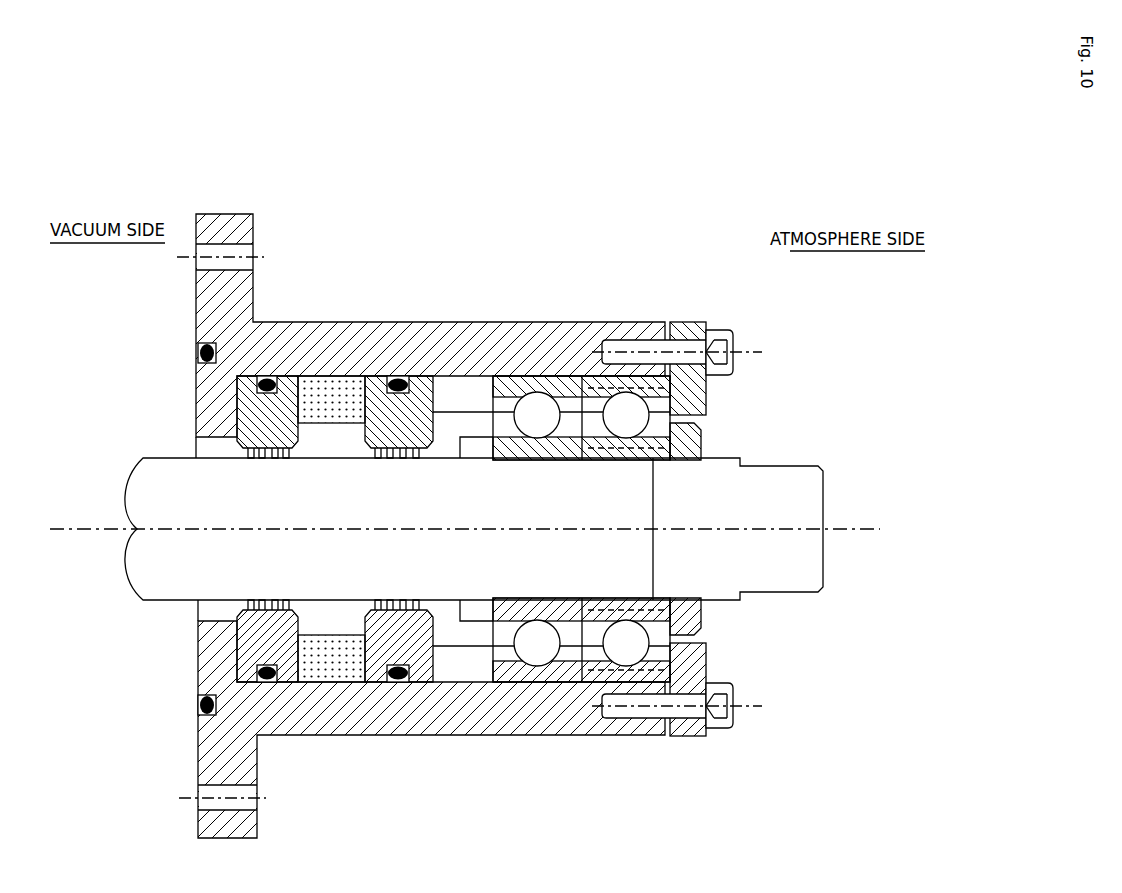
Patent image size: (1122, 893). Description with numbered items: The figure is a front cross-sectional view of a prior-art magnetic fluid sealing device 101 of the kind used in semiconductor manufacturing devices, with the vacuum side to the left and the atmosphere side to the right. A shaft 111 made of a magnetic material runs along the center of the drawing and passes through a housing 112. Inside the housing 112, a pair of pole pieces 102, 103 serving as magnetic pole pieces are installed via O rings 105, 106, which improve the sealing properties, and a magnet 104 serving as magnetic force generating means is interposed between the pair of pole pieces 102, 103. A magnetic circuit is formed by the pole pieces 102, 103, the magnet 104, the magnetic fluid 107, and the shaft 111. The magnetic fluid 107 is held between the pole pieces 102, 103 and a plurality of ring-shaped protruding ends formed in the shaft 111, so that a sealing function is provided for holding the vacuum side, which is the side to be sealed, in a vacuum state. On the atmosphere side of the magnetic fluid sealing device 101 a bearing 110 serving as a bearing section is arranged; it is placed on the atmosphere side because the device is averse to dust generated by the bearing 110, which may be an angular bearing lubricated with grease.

The magnetic fluid sealing device 101 is at (308, 187).
The pole piece 102 is at (248, 395).
The pole piece 103 is at (430, 376).
The magnet 104 is at (335, 388).
The O ring 105 is at (265, 380).
The O ring 106 is at (397, 382).
The magnetic fluid 107 is at (245, 456).
The bearing 110 is at (537, 437).
The shaft 111 is at (290, 573).
The housing 112 is at (611, 323).